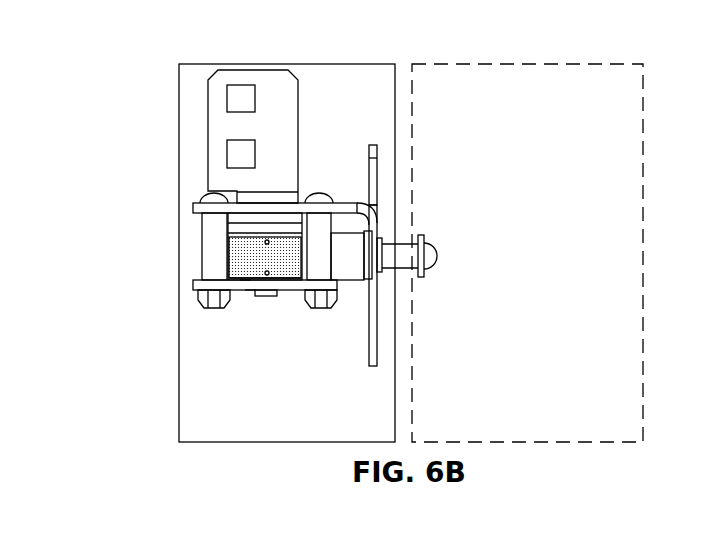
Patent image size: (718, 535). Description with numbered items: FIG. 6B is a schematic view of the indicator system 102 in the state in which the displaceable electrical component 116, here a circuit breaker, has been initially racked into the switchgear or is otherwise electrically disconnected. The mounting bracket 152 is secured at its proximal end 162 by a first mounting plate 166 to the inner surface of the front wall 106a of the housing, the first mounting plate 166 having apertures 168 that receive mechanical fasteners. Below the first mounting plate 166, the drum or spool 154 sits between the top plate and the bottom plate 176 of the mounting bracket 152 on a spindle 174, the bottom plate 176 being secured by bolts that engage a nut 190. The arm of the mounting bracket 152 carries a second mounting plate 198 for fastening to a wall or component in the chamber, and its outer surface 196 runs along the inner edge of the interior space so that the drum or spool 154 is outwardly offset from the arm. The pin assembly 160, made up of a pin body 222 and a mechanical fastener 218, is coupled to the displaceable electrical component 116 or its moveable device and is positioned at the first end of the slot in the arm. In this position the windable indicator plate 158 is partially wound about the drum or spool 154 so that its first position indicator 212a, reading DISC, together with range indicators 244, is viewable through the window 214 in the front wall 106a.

The indicator system 102 is at (158, 164).
The front wall 106a is at (200, 332).
The displaceable electrical component 116 is at (620, 203).
The mounting bracket 152 is at (283, 119).
The proximal end 162 is at (200, 133).
The first mounting plate 166 is at (200, 133).
The apertures 168 is at (235, 98).
The second mounting plate 198 is at (372, 145).
The outer surface 196 is at (367, 332).
The nut 190 is at (197, 293).
The range indicators 244 is at (275, 240).
The drum or spool 154 is at (237, 231).
The first position indicator 212a is at (238, 242).
The windable indicator plate 158 is at (238, 270).
The window 214 is at (247, 275).
The bottom plate 176 is at (248, 280).
The spindle 174 is at (265, 295).
The pin body 222 is at (395, 272).
The pin assembly 160 is at (430, 242).
The mechanical fastener 218 is at (433, 262).